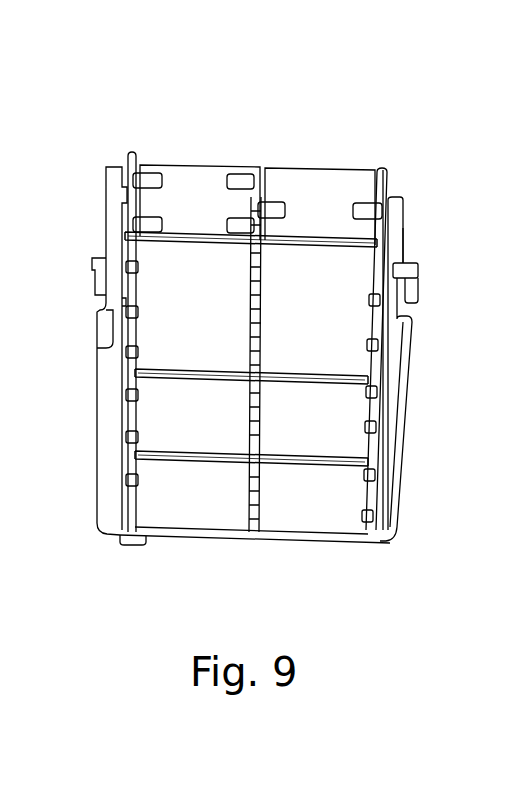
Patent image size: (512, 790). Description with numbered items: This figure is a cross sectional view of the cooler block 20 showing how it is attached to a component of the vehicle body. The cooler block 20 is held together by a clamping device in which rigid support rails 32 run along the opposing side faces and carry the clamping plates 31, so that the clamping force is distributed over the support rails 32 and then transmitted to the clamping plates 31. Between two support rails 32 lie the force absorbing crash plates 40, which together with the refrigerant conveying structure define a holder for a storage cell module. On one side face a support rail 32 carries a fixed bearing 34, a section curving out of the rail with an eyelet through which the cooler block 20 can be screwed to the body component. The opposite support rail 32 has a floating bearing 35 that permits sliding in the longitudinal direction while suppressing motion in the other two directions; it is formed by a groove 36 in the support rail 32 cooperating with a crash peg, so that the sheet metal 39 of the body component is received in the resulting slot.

The cooler block 20 is at (273, 101).
The clamping plate 31 is at (131, 150).
The support rail 32 is at (103, 163).
The fixed bearing 34 is at (84, 236).
The floating bearing 35 is at (417, 236).
The groove 36 is at (405, 259).
The sheet metal 39 is at (418, 282).
The crash plate 40 is at (196, 188).